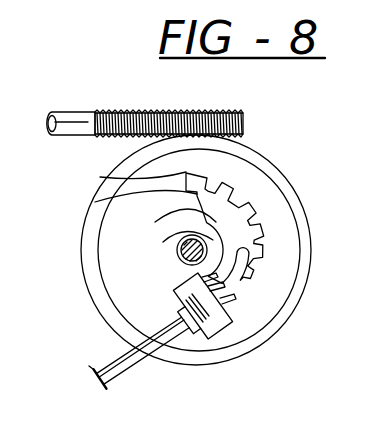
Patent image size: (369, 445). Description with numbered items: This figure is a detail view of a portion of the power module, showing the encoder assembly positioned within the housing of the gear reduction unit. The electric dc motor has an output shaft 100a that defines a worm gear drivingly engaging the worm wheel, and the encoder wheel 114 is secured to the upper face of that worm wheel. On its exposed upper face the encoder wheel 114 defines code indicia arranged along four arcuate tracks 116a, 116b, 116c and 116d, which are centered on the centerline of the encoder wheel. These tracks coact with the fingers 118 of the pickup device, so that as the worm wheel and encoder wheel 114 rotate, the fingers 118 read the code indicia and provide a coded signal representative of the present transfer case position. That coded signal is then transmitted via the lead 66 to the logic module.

The output shaft 100a is at (139, 110).
The encoder wheel 114 is at (130, 291).
The arcuate track 116a is at (100, 177).
The arcuate track 116b is at (95, 202).
The arcuate track 116c is at (160, 221).
The arcuate track 116d is at (164, 243).
The fingers 118 is at (238, 311).
The lead 66 is at (125, 367).